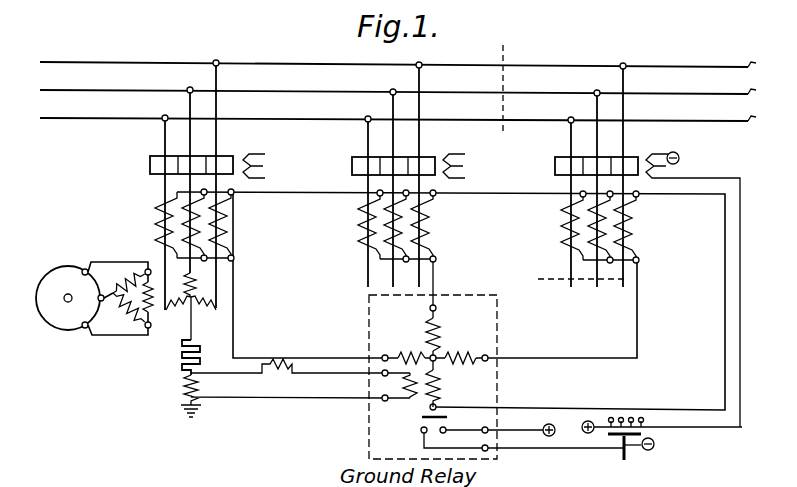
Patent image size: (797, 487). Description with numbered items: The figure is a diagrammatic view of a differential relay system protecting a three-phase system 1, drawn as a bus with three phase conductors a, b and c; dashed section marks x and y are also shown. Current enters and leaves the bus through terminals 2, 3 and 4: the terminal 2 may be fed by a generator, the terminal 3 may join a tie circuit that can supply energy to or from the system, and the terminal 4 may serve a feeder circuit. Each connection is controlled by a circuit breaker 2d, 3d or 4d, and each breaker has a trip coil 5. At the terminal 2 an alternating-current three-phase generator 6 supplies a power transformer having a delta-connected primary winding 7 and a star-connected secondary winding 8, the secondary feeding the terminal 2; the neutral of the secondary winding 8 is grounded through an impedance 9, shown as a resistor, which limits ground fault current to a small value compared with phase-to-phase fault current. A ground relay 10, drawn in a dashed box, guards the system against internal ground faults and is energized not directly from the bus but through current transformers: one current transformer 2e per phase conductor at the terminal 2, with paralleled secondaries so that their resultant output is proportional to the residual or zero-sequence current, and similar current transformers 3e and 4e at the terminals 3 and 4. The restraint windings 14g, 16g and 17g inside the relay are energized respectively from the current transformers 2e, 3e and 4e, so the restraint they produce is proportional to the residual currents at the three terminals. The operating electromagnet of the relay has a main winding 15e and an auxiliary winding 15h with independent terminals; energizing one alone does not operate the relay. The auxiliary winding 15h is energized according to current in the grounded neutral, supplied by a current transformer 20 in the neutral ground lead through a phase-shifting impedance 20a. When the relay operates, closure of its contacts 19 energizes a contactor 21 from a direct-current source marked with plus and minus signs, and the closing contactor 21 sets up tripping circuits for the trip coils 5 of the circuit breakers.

The system 1 is at (30, 97).
The phase conductor a is at (762, 68).
The phase conductor b is at (762, 95).
The phase conductor c is at (761, 122).
The section line x is at (574, 279).
The section line y is at (507, 57).
The terminal 2 is at (146, 151).
The circuit breaker 2d is at (150, 168).
The current transformer 2e is at (160, 212).
The terminal 3 is at (352, 151).
The circuit breaker 3d is at (352, 168).
The current transformer 3e is at (362, 215).
The terminal 4 is at (550, 151).
The circuit breaker 4d is at (555, 168).
The current transformer 4e is at (565, 215).
The trip coil 5 is at (245, 156).
The alternating-current three-phase generator 6 is at (68, 275).
The delta-connected primary winding 7 is at (142, 264).
The star-connected secondary winding 8 is at (196, 297).
The impedance 9 is at (182, 357).
The ground relay 10 is at (497, 320).
The restraint winding 14g is at (407, 357).
The main winding 15e is at (440, 392).
The auxiliary winding 15h is at (412, 396).
The restraint winding 16g is at (440, 336).
The restraint winding 17g is at (456, 362).
The contacts 19 is at (423, 422).
The current transformer 20 is at (186, 388).
The impedance 20a is at (290, 372).
The contactor 21 is at (630, 452).